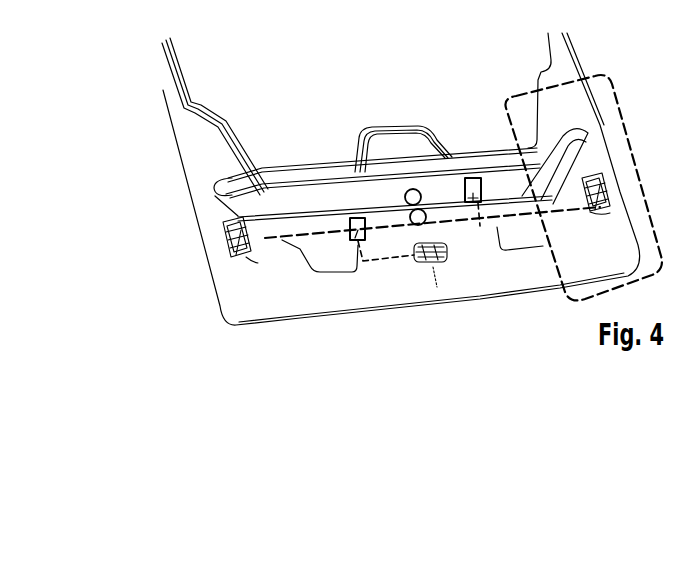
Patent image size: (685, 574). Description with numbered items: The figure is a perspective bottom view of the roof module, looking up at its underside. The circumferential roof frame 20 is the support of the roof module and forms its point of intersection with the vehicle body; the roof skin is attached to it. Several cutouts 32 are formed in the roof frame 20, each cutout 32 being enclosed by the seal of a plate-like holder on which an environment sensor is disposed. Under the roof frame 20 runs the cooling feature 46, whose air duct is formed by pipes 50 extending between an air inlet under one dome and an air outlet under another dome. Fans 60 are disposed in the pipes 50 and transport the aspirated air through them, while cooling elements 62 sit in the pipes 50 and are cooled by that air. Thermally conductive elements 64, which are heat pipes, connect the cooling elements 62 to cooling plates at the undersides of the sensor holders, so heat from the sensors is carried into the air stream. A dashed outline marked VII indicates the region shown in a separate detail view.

The roof frame 20 is at (234, 289).
The cutout 32 is at (227, 252).
The cooling feature 46 is at (345, 174).
The pipes 50 is at (297, 216).
The fans 60 is at (416, 209).
The cooling elements 62 is at (357, 241).
The thermally conductive elements 64 is at (277, 239).
The detail view VII region VII is at (624, 108).